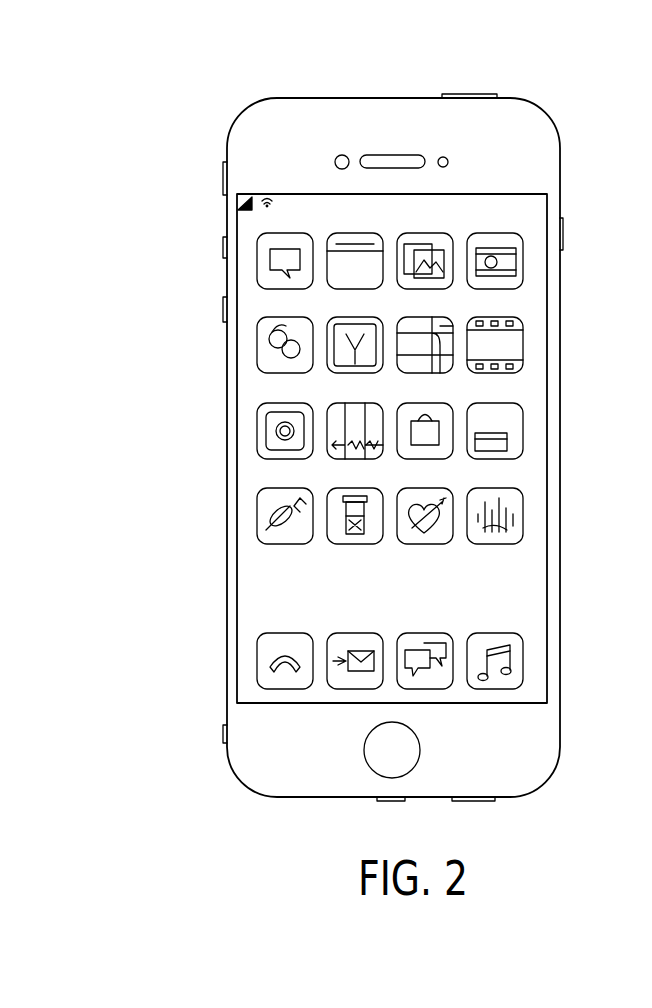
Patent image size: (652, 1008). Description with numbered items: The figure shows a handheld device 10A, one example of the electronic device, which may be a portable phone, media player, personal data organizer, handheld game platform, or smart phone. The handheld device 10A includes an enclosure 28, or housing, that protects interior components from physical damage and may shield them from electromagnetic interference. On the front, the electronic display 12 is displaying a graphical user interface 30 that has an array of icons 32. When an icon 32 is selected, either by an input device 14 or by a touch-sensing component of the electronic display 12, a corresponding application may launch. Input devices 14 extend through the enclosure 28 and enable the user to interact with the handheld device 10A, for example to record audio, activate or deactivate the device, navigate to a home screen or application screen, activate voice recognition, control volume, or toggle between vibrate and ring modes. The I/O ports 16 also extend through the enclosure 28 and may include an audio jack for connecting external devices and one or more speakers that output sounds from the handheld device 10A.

The handheld device 10A is at (213, 86).
The electronic display 12 is at (548, 576).
The input devices 14 is at (469, 94).
The I/O ports 16 is at (276, 798).
The enclosure 28 is at (561, 178).
The graphical user interface 30 is at (523, 387).
The icon 32 is at (427, 546).